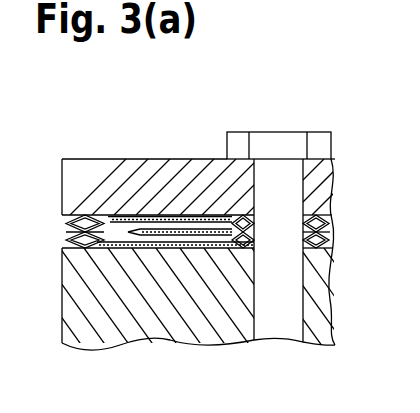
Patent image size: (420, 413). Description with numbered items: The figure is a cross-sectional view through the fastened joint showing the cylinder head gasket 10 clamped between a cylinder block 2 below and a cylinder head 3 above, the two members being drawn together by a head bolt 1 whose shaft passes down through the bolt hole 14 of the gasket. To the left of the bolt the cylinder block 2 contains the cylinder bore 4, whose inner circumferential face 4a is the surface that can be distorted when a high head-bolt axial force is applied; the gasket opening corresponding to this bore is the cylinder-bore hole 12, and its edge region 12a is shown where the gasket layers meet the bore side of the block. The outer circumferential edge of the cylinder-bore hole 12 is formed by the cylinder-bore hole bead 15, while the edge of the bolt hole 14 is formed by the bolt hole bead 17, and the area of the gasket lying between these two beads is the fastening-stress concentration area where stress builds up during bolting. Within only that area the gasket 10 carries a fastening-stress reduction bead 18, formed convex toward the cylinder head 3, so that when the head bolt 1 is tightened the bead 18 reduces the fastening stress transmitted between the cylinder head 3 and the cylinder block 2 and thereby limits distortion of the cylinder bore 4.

The head bolt 1 is at (288, 132).
The cylinder block 2 is at (170, 312).
The cylinder head 3 is at (131, 173).
The cylinder bore 4 is at (53, 280).
The inner circumferential face of the cylinder bore 4a is at (64, 299).
The cylinder head gasket 10 is at (107, 215).
The cylinder-bore hole 12 is at (66, 218).
The gasket end portion 12a is at (62, 213).
The bolt hole 14 is at (275, 231).
The cylinder-bore hole bead 15 is at (64, 212).
The bolt hole bead 17 is at (226, 215).
The fastening-stress reduction bead 18 is at (162, 215).